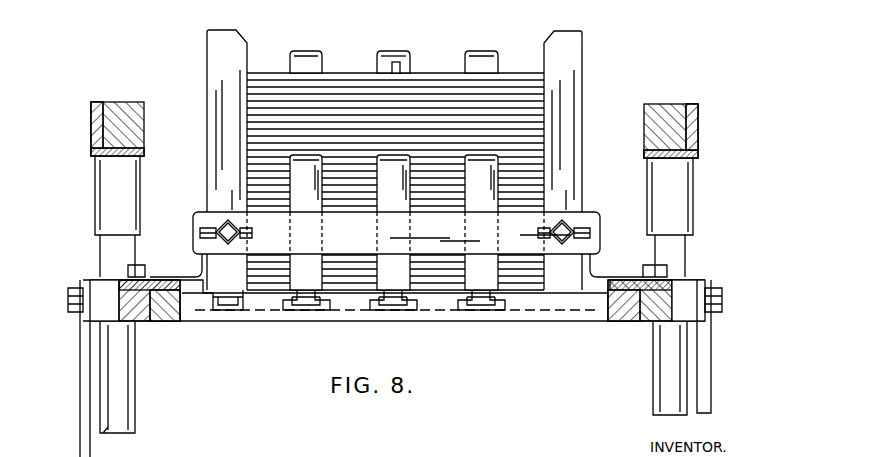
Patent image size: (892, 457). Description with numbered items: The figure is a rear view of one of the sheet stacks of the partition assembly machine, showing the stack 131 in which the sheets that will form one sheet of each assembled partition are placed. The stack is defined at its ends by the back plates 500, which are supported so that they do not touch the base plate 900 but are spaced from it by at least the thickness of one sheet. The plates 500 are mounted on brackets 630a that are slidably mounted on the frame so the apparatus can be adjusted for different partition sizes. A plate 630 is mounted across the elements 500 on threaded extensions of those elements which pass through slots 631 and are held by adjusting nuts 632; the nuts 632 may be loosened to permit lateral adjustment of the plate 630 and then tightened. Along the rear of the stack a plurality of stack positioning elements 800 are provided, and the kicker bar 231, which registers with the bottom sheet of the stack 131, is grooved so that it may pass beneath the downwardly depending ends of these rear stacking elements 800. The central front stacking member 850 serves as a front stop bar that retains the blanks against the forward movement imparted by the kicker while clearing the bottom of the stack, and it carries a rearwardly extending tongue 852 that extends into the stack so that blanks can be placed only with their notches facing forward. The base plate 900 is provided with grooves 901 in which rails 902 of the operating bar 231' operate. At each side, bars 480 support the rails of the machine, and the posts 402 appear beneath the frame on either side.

The stack 131 is at (344, 67).
The back plate 500 is at (216, 47).
The stack positioning element 800 is at (315, 47).
The front stop bar 850 is at (403, 44).
The tongue 852 is at (400, 58).
The plate 630 is at (580, 216).
The slot 631 is at (205, 230).
The adjusting nut 632 is at (220, 225).
The bracket 630a is at (193, 268).
The operating bar 231' is at (213, 319).
The kicker bar 231 is at (334, 320).
The base plate 900 is at (432, 318).
The groove 901 is at (498, 312).
The rail 902 is at (484, 305).
The support post 402 is at (125, 380).
The bar 480 is at (90, 398).